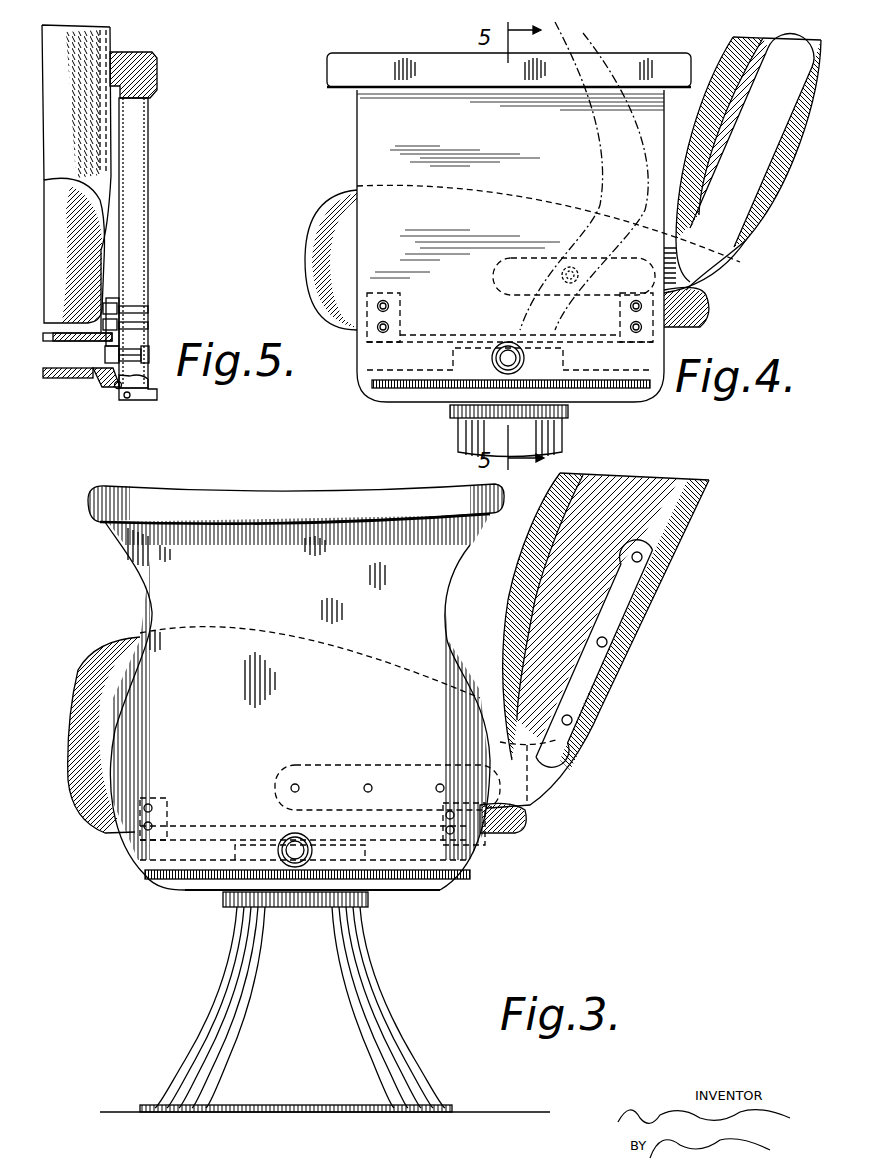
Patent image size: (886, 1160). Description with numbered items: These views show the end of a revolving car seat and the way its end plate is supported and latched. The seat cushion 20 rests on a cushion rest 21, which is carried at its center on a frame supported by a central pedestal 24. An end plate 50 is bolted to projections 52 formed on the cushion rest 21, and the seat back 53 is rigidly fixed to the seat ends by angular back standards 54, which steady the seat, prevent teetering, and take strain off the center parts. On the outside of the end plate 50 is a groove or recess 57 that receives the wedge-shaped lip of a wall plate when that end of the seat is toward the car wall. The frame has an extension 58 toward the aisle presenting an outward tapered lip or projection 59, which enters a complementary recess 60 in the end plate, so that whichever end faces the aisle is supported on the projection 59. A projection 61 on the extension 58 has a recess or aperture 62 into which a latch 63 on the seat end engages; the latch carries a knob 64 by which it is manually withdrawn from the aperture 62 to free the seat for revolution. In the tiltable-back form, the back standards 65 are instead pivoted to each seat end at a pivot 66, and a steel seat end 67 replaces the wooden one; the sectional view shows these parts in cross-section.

In FIG. 5, the seat cushion 20 is at (67, 183).
In FIG. 4, the seat cushion 20 is at (306, 272).
In FIG. 3, the seat cushion 20 is at (98, 662).
In FIG. 5, the cushion rest 21 is at (70, 333).
In FIG. 4, the cushion rest 21 is at (432, 340).
In FIG. 3, the cushion rest 21 is at (205, 837).
In FIG. 4, the central pedestal 24 is at (478, 430).
In FIG. 3, the central pedestal 24 is at (226, 1003).
In FIG. 3, the end plate 50 is at (282, 557).
In FIG. 5, the projections 52 is at (105, 304).
In FIG. 4, the projections 52 is at (402, 308).
In FIG. 3, the projections 52 is at (165, 817).
In FIG. 5, the seat back 53 is at (105, 47).
In FIG. 4, the seat back 53 is at (742, 186).
In FIG. 3, the seat back 53 is at (676, 520).
In FIG. 4, the angular back standards 54 is at (574, 276).
In FIG. 3, the angular back standards 54 is at (560, 768).
In FIG. 5, the groove or recess 57 is at (152, 393).
In FIG. 4, the groove or recess 57 is at (622, 388).
In FIG. 3, the groove or recess 57 is at (312, 852).
In FIG. 5, the extension 58 is at (68, 378).
In FIG. 5, the tapered lip or projection 59 is at (114, 388).
In FIG. 3, the tapered lip or projection 59 is at (422, 886).
In FIG. 5, the recess 60 is at (126, 398).
In FIG. 3, the recess 60 is at (450, 870).
In FIG. 5, the projection 61 is at (105, 351).
In FIG. 5, the recess or aperture 62 is at (102, 378).
In FIG. 5, the latch 63 is at (149, 355).
In FIG. 5, the knob 64 is at (140, 350).
In FIG. 4, the knob 64 is at (516, 366).
In FIG. 3, the knob 64 is at (282, 862).
In FIG. 5, the back standards 65 is at (111, 221).
In FIG. 4, the back standards 65 is at (603, 148).
In FIG. 4, the pivot 66 is at (568, 225).
In FIG. 5, the steel seat end 67 is at (135, 132).
In FIG. 4, the steel seat end 67 is at (378, 144).